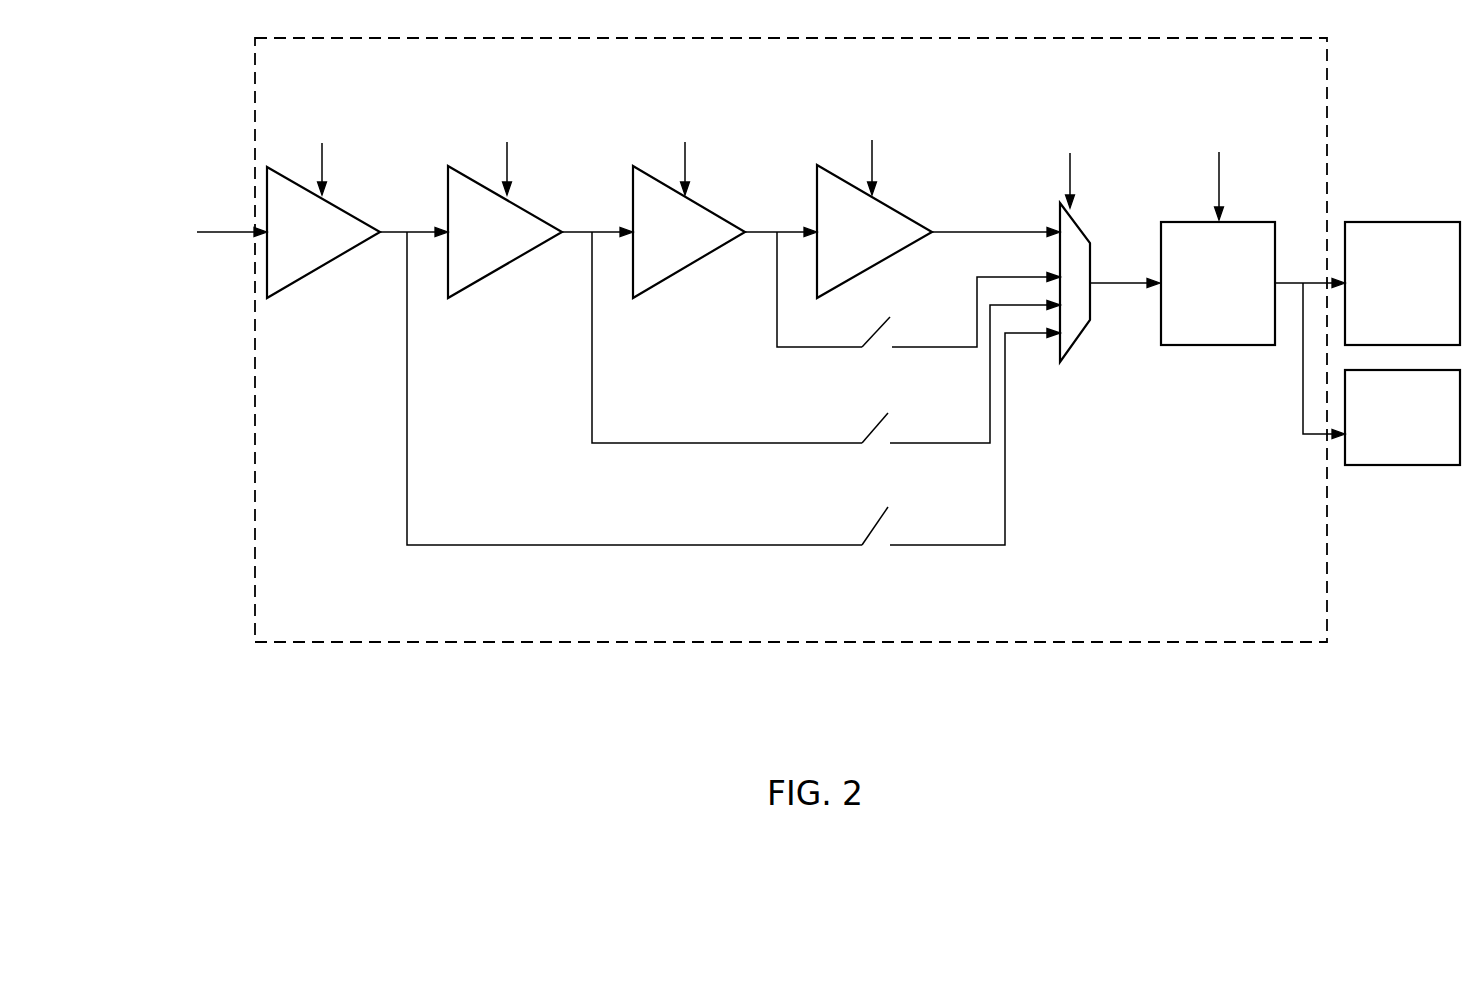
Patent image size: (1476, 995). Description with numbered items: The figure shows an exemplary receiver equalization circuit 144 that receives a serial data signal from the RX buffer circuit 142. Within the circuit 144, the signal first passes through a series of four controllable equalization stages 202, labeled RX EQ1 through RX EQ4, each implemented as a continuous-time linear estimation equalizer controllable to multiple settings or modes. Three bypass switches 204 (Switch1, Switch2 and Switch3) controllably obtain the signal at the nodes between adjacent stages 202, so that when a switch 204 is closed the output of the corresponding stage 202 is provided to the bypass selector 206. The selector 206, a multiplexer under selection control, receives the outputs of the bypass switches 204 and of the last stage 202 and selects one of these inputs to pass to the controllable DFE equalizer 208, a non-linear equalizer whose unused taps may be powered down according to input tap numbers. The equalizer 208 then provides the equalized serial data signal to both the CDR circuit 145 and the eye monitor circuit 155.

The RX buffer circuit 142 is at (190, 240).
The receiver equalization circuit 144 is at (1086, 649).
The CDR circuit 145 is at (1402, 283).
The eye monitor circuit 155 is at (1402, 417).
The controllable equalization stage 202 is at (663, 195).
The bypass switch 204 is at (733, 407).
The bypass selector 206 is at (1097, 242).
The controllable DFE equalizer 208 is at (1253, 282).